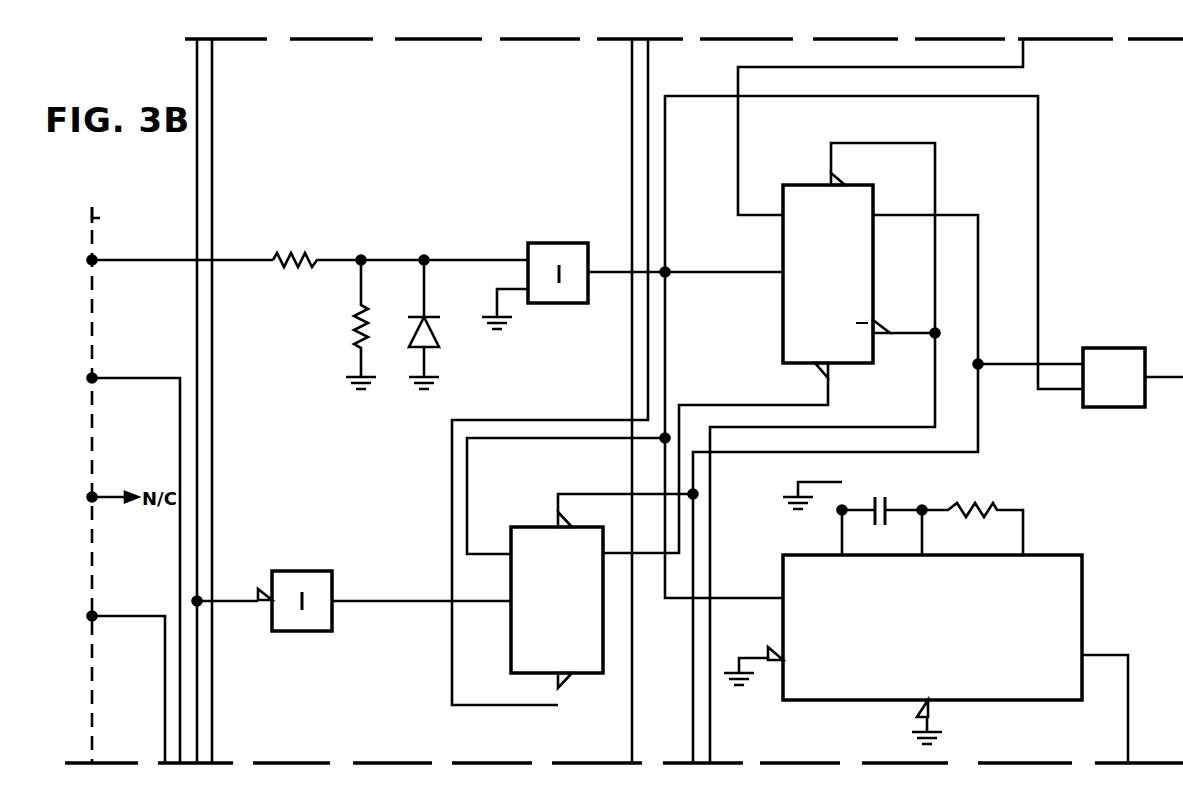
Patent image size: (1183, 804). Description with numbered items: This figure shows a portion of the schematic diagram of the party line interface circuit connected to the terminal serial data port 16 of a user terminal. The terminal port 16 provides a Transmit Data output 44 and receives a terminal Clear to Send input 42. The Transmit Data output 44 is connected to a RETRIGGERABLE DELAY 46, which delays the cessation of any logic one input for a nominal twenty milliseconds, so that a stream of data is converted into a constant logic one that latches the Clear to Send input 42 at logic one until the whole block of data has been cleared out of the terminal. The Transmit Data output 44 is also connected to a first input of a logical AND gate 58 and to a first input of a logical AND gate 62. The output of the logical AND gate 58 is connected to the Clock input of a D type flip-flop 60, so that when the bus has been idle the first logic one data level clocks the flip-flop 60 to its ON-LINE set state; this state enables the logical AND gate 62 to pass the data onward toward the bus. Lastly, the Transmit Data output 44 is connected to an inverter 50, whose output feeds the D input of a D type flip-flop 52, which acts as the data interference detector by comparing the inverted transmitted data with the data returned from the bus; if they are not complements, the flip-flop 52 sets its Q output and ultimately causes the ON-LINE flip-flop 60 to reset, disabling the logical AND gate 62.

The terminal serial data port 16 is at (100, 218).
The Transmit Data output 44 is at (88, 256).
The terminal Clear to Send input 42 is at (88, 612).
The logical AND gate 58 is at (548, 245).
The D type flip-flop 60 is at (783, 322).
The logical AND gate 62 is at (1105, 357).
The D type flip-flop 52 is at (530, 530).
The inverter 50 is at (340, 530).
The RETRIGGERABLE DELAY 46 is at (1065, 565).